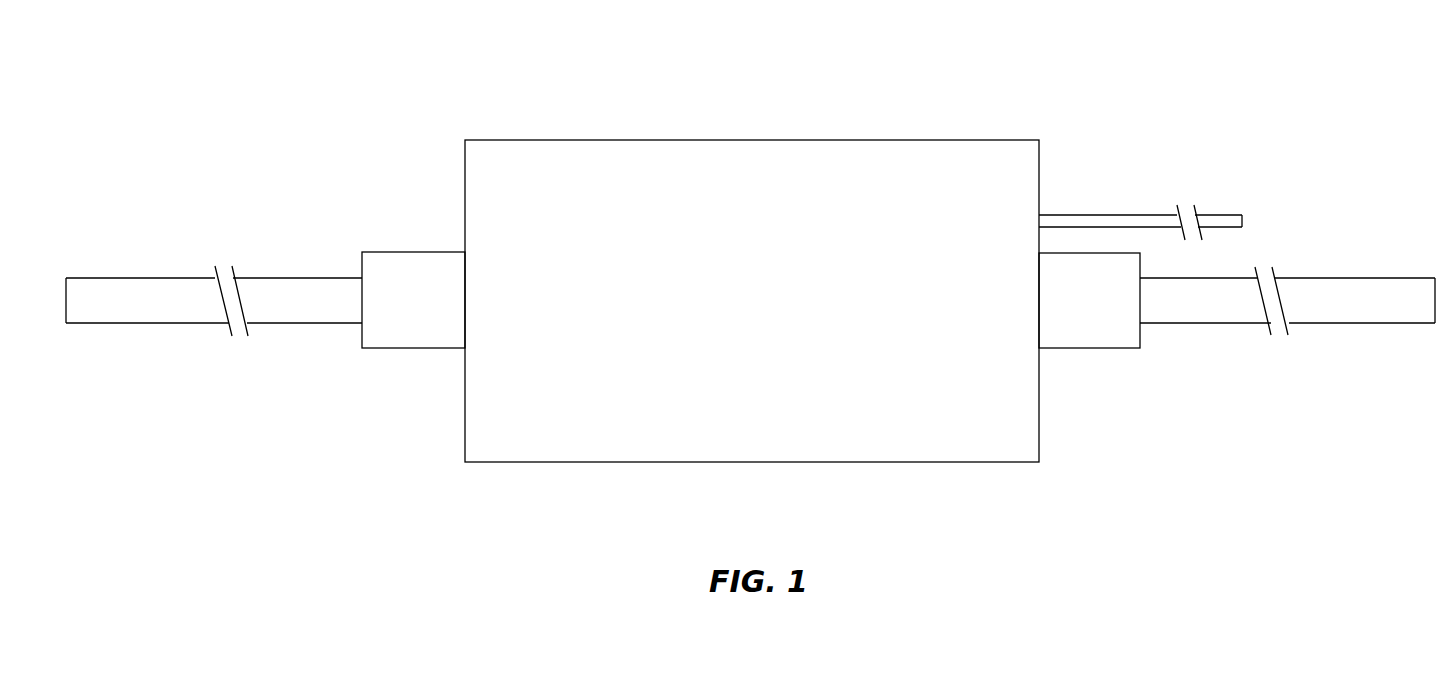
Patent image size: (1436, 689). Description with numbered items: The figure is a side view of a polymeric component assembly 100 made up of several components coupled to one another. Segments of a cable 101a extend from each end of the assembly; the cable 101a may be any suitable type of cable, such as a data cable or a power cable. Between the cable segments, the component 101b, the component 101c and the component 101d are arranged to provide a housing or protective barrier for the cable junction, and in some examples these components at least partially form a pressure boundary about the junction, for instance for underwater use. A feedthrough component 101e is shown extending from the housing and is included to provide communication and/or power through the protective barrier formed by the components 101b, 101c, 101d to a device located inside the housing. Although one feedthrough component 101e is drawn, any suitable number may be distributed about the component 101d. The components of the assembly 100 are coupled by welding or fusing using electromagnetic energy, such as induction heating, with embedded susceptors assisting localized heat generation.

The polymeric component assembly 100 is at (615, 67).
The cable 101a is at (268, 278).
The component 101b is at (412, 252).
The component 101c is at (757, 140).
The component 101d is at (1097, 348).
The feedthrough component 101e is at (1093, 215).